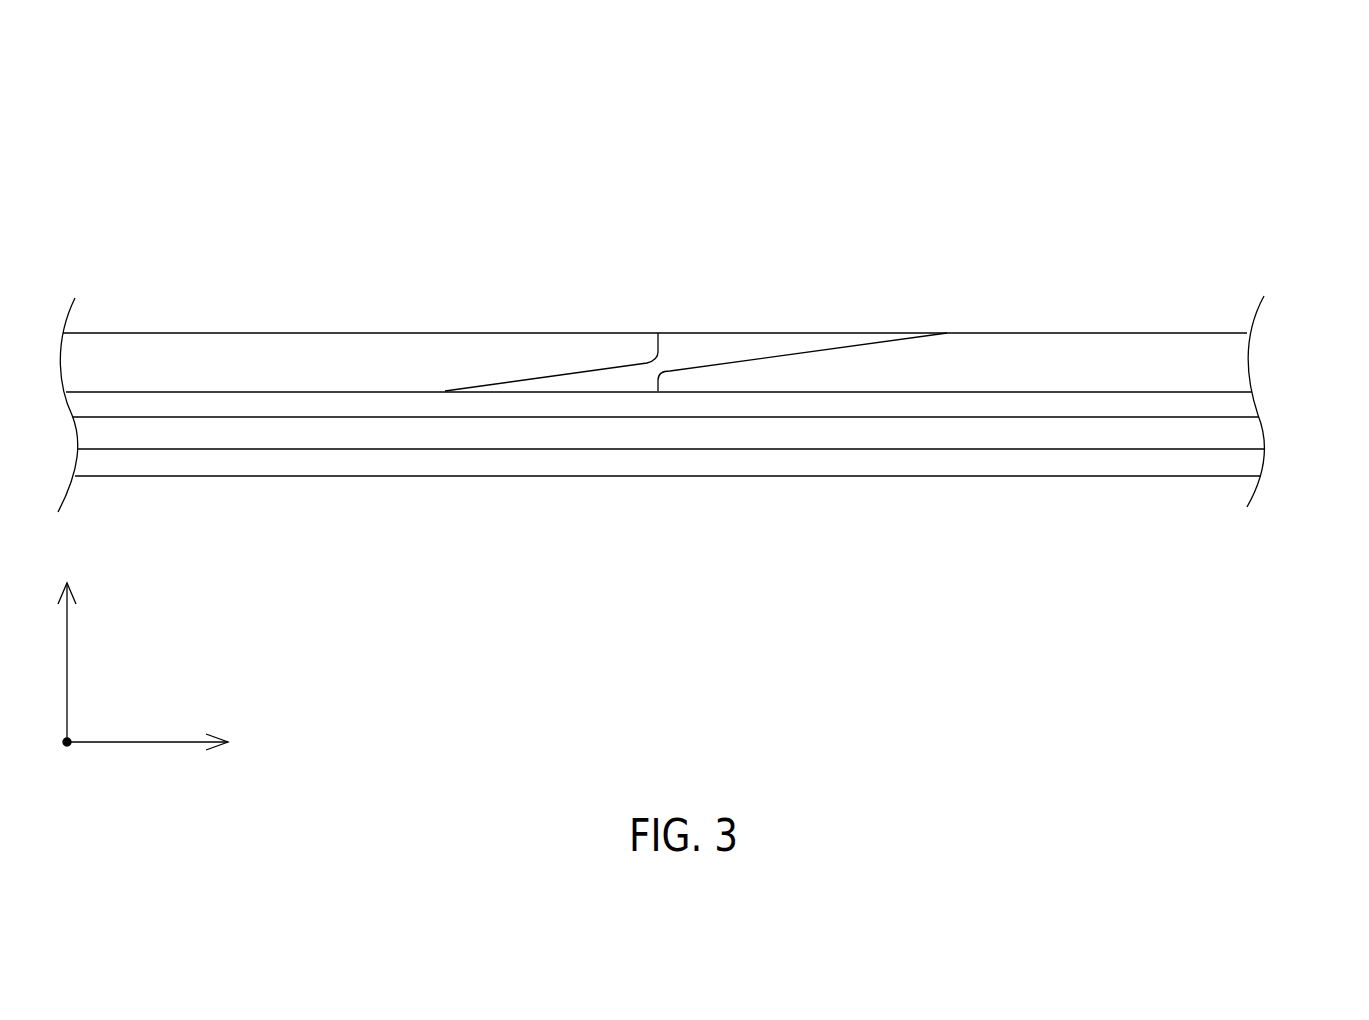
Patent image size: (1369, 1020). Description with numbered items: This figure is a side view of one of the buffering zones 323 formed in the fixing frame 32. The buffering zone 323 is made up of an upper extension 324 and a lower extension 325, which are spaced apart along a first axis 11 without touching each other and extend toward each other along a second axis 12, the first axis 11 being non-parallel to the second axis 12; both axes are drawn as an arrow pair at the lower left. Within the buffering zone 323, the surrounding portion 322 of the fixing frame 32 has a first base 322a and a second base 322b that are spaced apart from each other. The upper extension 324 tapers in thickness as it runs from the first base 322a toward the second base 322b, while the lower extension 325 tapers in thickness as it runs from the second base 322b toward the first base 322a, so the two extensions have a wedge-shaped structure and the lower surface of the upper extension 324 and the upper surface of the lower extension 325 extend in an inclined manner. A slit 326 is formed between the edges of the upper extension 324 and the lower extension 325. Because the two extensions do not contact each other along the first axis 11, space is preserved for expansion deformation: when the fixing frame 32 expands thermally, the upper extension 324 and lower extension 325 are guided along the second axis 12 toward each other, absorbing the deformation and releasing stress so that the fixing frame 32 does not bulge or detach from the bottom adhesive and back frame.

The fixing frame 32 is at (1255, 208).
The surrounding portion 322 is at (163, 332).
The first base 322a is at (338, 365).
The second base 322b is at (1110, 362).
The buffering zone 323 is at (726, 259).
The upper extension 324 is at (582, 346).
The lower extension 325 is at (843, 370).
The slit 326 is at (736, 313).
The first axis 11 is at (67, 644).
The second axis 12 is at (169, 744).